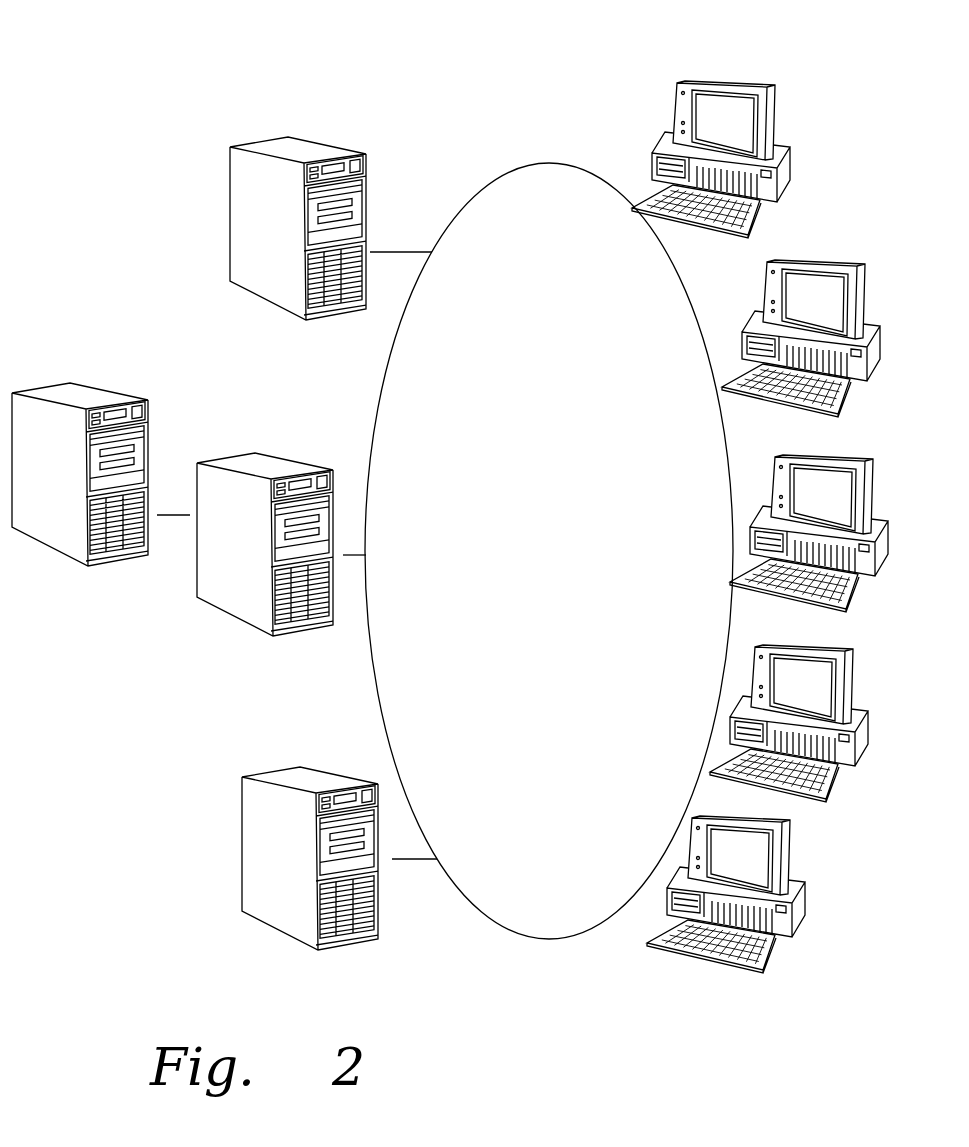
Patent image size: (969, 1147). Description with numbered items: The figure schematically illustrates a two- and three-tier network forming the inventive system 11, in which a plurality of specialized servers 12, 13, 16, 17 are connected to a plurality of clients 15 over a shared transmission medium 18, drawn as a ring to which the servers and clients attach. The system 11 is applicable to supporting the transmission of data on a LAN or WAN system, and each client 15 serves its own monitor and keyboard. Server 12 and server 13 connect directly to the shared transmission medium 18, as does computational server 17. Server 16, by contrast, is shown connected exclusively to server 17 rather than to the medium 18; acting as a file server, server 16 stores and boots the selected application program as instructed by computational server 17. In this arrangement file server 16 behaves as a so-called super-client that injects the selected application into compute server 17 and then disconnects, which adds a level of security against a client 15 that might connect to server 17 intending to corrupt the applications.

The inventive system 11 is at (165, 147).
The specialized server 12 is at (233, 213).
The specialized server 13 is at (250, 845).
The clients 15 is at (680, 218).
The file server 16 is at (62, 397).
The computational server 17 is at (240, 603).
The shared transmission medium 18 is at (545, 940).